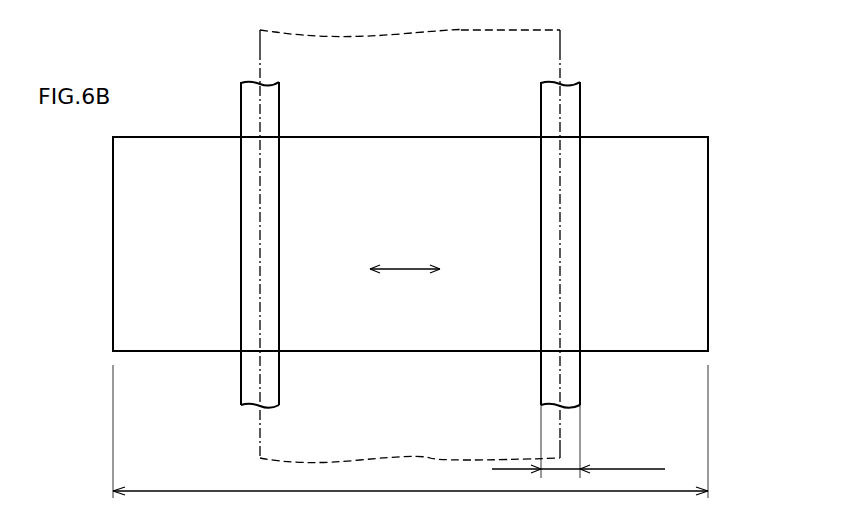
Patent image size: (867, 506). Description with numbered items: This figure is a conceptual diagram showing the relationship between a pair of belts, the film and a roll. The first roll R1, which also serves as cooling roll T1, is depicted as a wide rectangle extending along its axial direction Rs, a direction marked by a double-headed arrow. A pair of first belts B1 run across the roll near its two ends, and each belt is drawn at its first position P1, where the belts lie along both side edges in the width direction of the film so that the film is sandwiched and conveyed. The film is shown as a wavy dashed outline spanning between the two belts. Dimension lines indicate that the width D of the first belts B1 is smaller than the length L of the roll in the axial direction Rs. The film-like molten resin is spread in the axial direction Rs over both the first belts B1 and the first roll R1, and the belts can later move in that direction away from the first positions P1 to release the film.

The first roll R1 is at (122, 253).
The cooling roll T1 is at (640, 147).
The first belt B1 is at (244, 234).
The first position P1 is at (246, 386).
The axial direction Rs is at (405, 257).
The width of the belts D is at (578, 441).
The length in the axial direction L is at (410, 431).